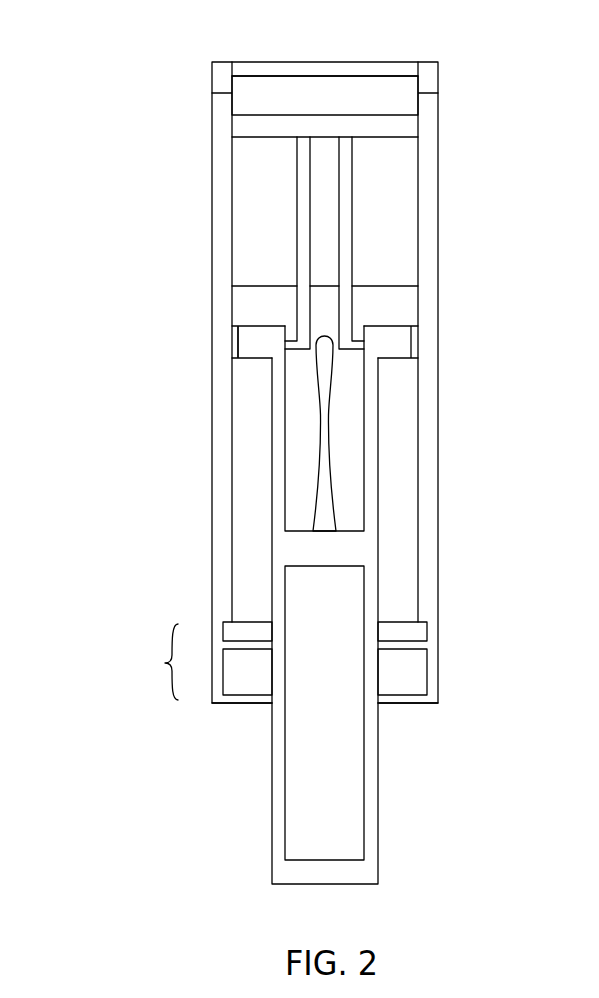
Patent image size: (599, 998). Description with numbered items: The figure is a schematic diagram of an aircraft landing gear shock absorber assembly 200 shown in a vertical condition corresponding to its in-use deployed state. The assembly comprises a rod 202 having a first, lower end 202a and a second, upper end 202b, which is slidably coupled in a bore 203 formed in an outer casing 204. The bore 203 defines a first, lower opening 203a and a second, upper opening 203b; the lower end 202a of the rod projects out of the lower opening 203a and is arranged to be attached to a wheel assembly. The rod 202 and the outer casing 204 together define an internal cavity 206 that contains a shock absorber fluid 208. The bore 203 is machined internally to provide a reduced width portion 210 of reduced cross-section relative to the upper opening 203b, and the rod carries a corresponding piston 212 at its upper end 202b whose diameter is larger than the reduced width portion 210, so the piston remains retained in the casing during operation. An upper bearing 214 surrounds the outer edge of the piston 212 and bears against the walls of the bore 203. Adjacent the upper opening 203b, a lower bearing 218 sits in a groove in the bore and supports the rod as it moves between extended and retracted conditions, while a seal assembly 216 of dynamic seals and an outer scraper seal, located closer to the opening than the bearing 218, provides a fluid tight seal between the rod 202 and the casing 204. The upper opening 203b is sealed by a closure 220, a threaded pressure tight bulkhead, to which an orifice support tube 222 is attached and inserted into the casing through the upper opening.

The shock absorber assembly 200 is at (118, 142).
The rod 202 is at (380, 472).
The first, lower end of the rod 202a is at (380, 866).
The second, upper end of the rod 202b is at (253, 347).
The bore 203 is at (230, 268).
The first, lower opening 203a is at (385, 705).
The second, upper opening 203b is at (415, 118).
The outer casing 204 is at (220, 213).
The internal cavity 206 is at (400, 205).
The shock absorber fluid 208 is at (390, 308).
The reduced width portion 210 is at (165, 663).
The piston 212 is at (398, 345).
The upper bearing 214 is at (232, 338).
The seal assembly 216 is at (413, 673).
The lower bearing 218 is at (415, 630).
The closure 220 is at (398, 74).
The orifice support tube 222 is at (355, 256).